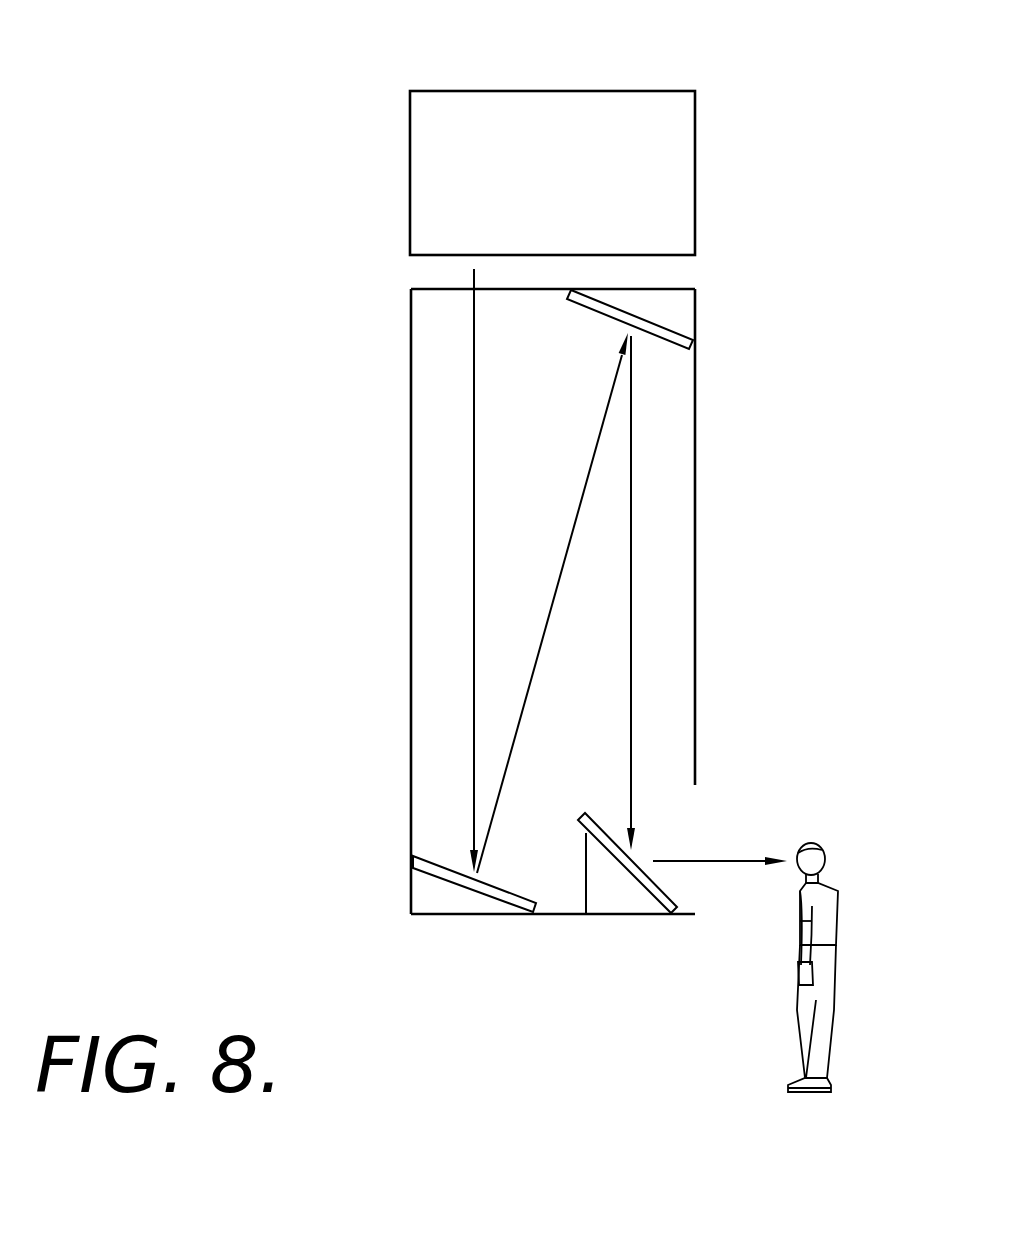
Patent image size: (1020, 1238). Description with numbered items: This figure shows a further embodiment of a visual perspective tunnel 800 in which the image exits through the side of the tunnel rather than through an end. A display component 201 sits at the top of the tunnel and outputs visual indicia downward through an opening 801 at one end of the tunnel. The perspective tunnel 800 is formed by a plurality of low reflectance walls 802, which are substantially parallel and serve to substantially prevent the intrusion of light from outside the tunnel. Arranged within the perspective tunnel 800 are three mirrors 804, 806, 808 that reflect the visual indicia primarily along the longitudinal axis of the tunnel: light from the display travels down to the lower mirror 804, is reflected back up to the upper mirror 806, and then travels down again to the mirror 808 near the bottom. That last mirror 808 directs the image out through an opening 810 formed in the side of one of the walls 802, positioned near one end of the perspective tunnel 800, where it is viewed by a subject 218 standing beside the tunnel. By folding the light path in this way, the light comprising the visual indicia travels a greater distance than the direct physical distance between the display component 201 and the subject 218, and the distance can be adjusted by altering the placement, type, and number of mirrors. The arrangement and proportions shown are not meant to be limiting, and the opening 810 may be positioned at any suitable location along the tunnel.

The display component 201 is at (573, 91).
The perspective tunnel 800 is at (222, 480).
The opening 801 is at (427, 289).
The low reflectance walls 802 is at (697, 523).
The mirror 804 is at (427, 871).
The mirror 806 is at (678, 333).
The mirror 808 is at (650, 895).
The opening 810 is at (688, 821).
The subject 218 is at (838, 906).